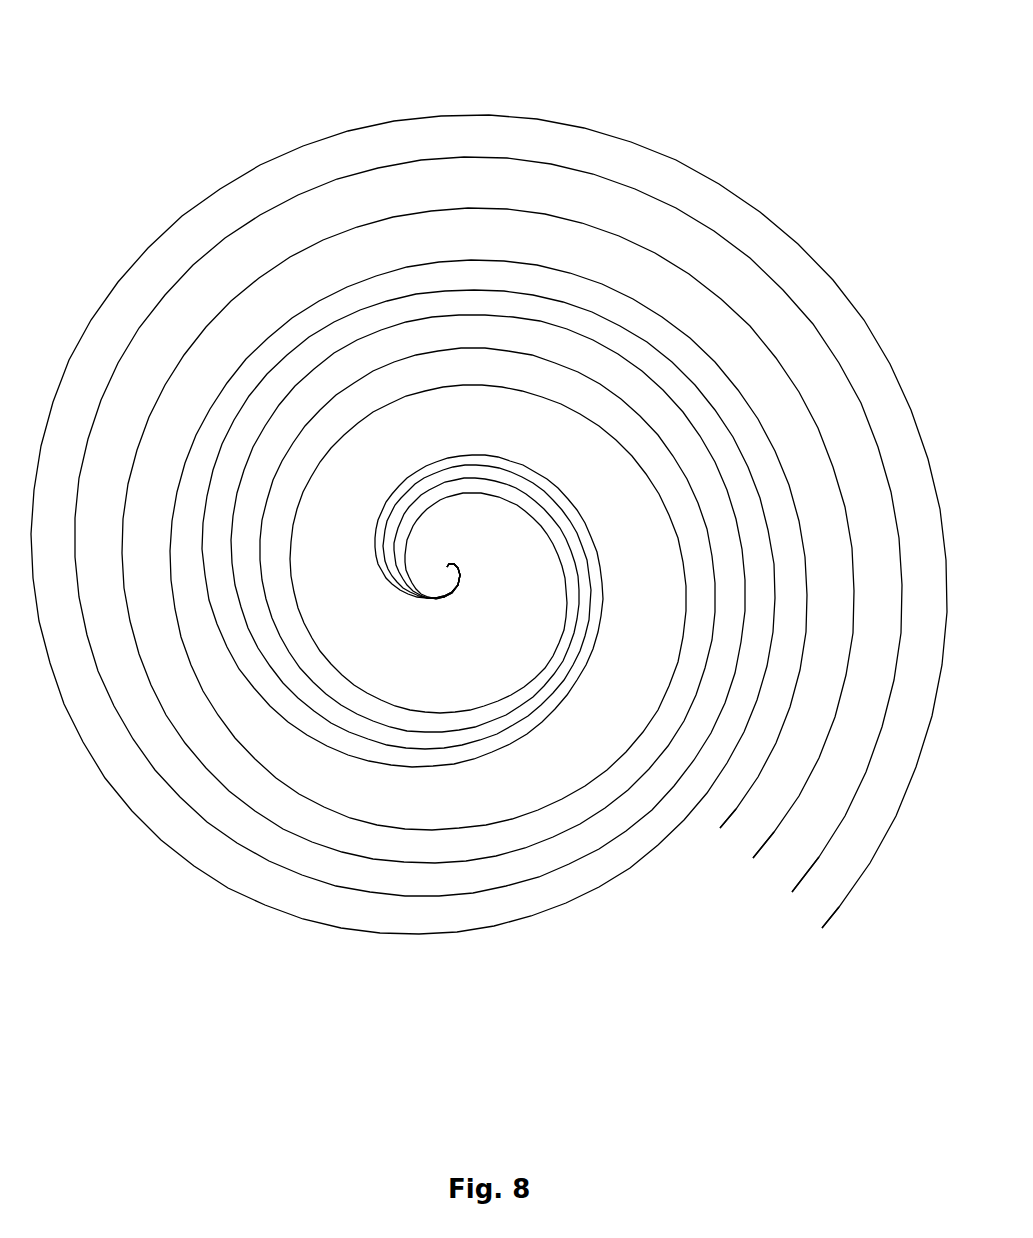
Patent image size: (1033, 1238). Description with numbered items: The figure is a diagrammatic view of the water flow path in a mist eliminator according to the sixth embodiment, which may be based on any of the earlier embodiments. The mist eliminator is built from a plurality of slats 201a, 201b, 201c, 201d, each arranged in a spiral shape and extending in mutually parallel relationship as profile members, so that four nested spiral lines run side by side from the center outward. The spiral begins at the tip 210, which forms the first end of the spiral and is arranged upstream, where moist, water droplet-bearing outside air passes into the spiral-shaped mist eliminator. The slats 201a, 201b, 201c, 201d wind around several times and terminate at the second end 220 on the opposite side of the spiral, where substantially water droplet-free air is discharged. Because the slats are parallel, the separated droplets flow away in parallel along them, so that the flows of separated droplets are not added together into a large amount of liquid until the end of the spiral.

The slat 201a is at (733, 188).
The slat 201b is at (767, 265).
The slat 201c is at (242, 282).
The slat 201d is at (345, 277).
The tip 210 is at (436, 606).
The second end 220 is at (763, 870).